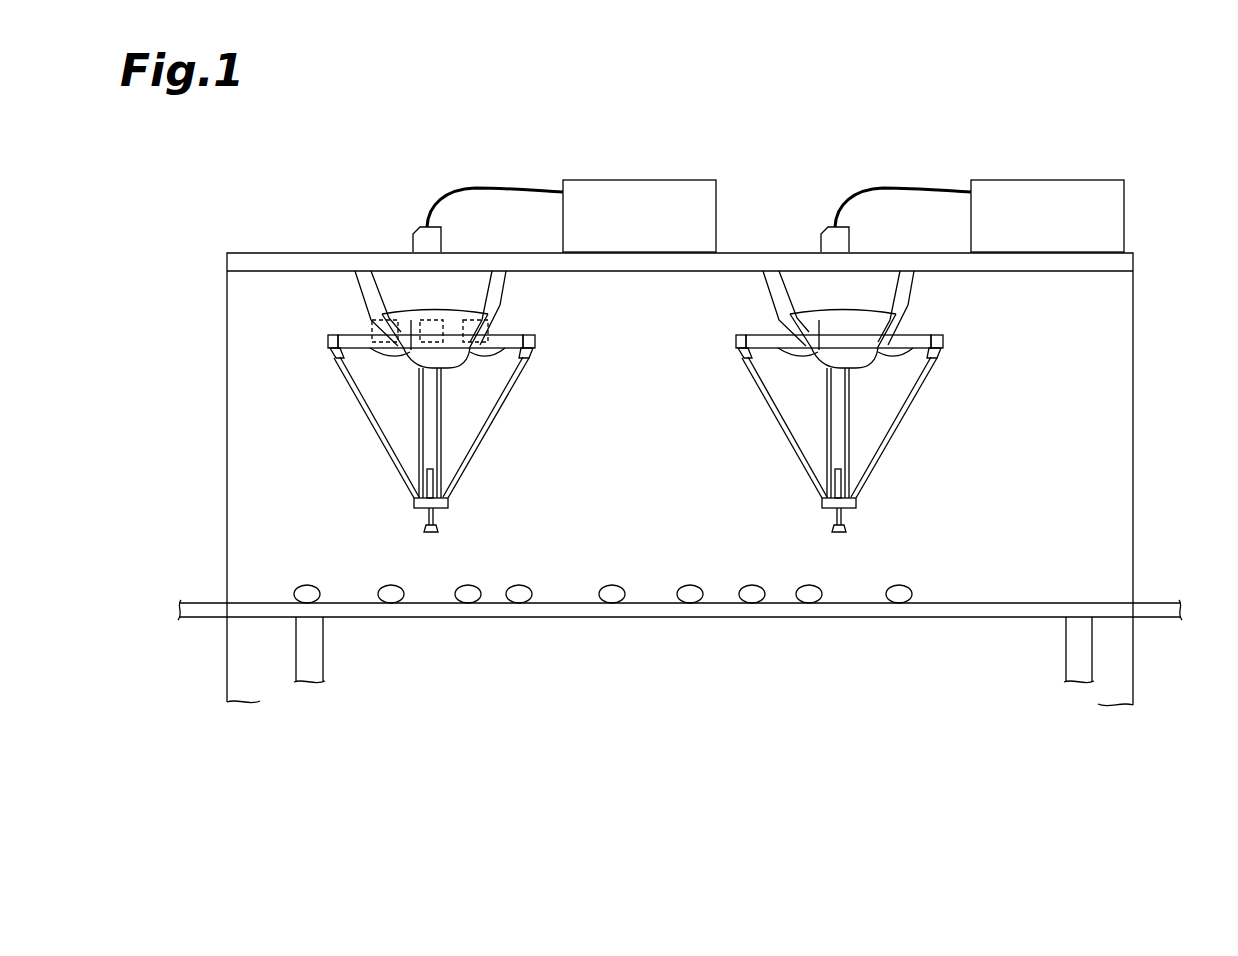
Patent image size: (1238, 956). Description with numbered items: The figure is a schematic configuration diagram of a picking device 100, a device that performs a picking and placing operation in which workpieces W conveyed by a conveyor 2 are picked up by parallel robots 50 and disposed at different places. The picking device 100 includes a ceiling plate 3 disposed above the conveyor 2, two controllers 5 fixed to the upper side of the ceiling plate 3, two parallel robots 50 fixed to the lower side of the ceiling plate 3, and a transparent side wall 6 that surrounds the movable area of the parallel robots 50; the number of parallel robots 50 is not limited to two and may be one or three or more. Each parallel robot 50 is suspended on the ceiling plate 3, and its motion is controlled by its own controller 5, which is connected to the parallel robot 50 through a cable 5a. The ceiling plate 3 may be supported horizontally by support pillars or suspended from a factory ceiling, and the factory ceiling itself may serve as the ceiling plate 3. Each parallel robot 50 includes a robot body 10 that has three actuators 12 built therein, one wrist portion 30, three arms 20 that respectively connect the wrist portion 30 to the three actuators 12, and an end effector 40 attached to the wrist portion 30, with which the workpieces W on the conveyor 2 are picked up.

The picking device 100 is at (518, 90).
The conveyor 2 is at (200, 603).
The ceiling plate 3 is at (322, 252).
The controller 5 is at (638, 180).
The cable 5a is at (463, 188).
The transparent side wall 6 is at (1133, 345).
The robot body 10 is at (422, 387).
The actuator 12 is at (372, 323).
The arm 20 is at (506, 412).
The wrist portion 30 is at (474, 496).
The end effector 40 is at (462, 526).
The parallel robot 50 is at (658, 387).
The workpiece W is at (612, 584).